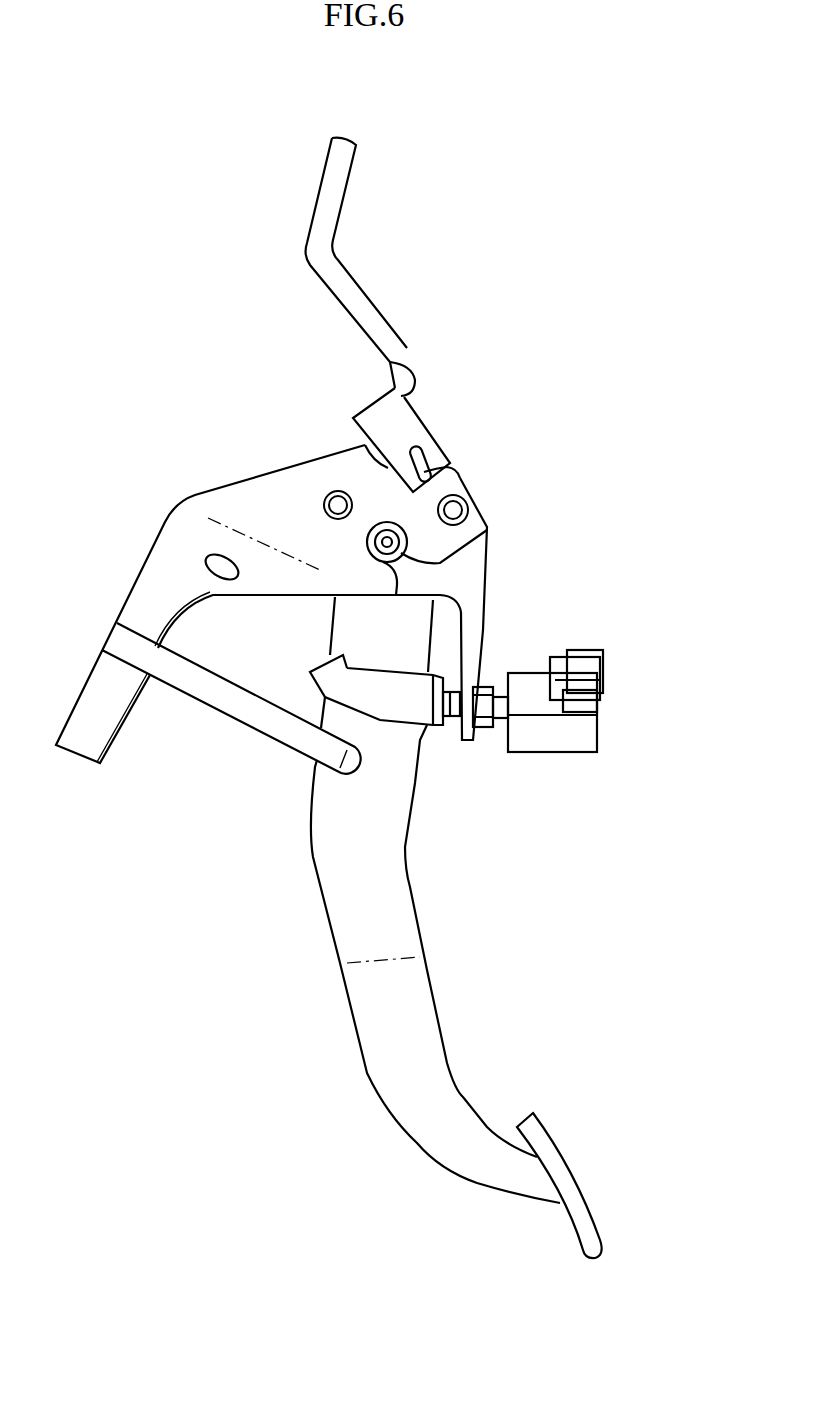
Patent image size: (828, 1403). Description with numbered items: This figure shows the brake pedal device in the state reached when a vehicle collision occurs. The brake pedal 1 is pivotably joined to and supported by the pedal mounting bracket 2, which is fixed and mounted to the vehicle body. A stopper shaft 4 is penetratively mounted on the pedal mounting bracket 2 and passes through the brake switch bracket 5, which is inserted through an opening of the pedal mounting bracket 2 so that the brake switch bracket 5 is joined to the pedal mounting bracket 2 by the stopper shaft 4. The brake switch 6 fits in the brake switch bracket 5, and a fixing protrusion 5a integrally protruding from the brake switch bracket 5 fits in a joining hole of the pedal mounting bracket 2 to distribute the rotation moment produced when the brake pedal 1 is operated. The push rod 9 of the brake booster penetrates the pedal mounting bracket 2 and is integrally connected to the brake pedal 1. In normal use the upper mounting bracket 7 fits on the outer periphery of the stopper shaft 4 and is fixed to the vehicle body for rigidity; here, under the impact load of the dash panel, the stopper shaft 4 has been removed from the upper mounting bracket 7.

The brake pedal 1 is at (447, 976).
The pedal mounting bracket 2 is at (253, 492).
The stopper shaft 4 is at (468, 503).
The brake switch bracket 5 is at (473, 585).
The fixing protrusion 5a is at (332, 492).
The brake switch 6 is at (568, 745).
The upper mounting bracket 7 is at (357, 293).
The push rod 9 is at (232, 703).